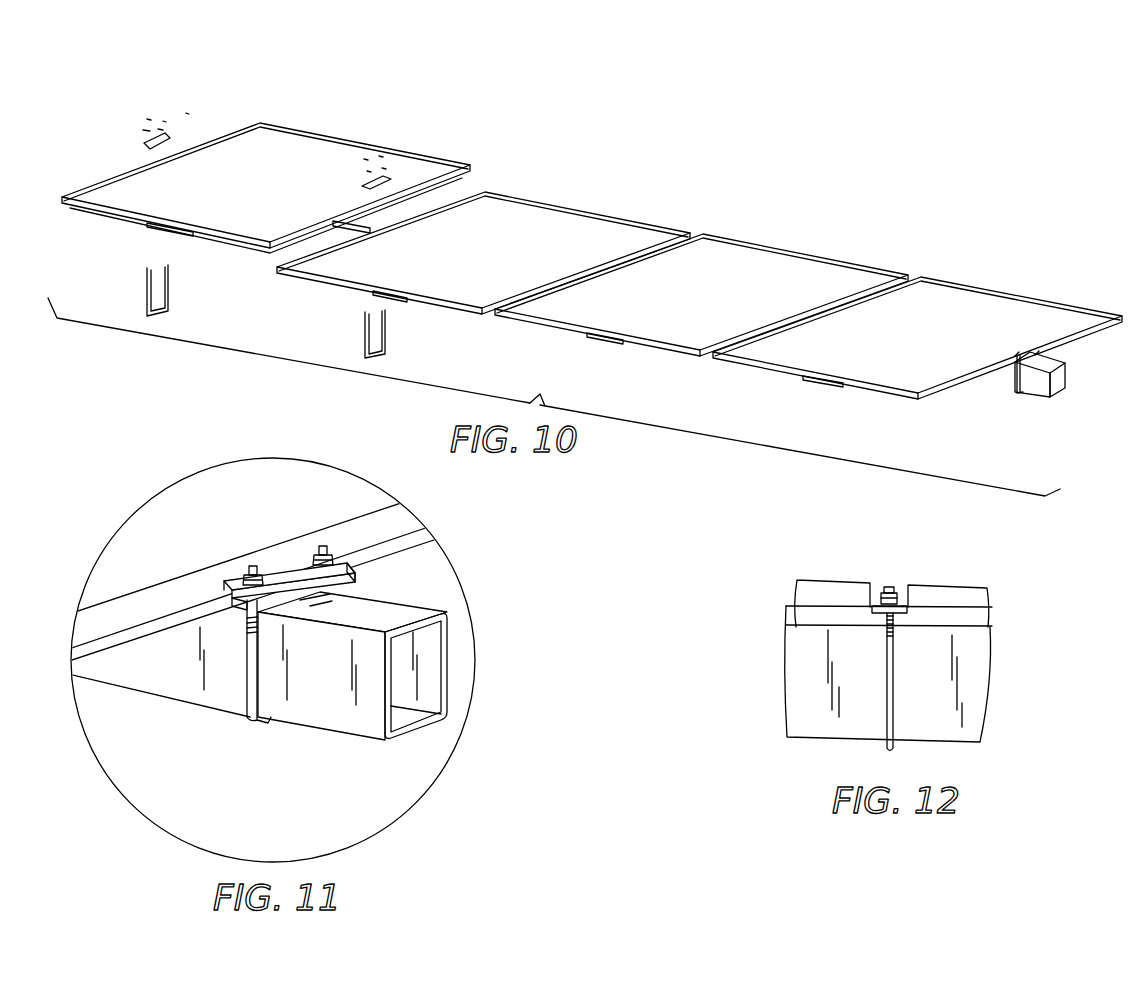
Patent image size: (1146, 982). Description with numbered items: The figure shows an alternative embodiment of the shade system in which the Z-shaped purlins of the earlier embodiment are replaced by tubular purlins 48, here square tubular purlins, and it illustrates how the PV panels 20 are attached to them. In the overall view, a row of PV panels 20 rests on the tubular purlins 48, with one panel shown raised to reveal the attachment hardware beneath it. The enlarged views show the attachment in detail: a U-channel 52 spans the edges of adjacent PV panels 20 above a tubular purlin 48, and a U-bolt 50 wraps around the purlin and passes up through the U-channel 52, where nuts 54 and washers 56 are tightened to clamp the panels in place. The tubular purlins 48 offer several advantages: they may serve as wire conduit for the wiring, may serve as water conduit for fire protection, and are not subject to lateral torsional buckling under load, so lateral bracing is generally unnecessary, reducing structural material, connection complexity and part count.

In FIG. 10, the PV panels 20 is at (428, 168).
In FIG. 11, the PV panels 20 is at (257, 582).
In FIG. 12, the PV panels 20 is at (847, 597).
In FIG. 10, the tubular purlins 48 is at (1040, 381).
In FIG. 11, the tubular purlins 48 is at (318, 700).
In FIG. 12, the tubular purlins 48 is at (977, 670).
In FIG. 10, the U-bolts 50 is at (386, 354).
In FIG. 11, the U-bolts 50 is at (250, 722).
In FIG. 12, the U-bolts 50 is at (893, 722).
In FIG. 10, the U-channels 52 is at (148, 146).
In FIG. 11, the U-channels 52 is at (297, 572).
In FIG. 12, the U-channels 52 is at (889, 609).
In FIG. 10, the nuts 54 is at (187, 110).
In FIG. 11, the nuts 54 is at (335, 552).
In FIG. 12, the nuts 54 is at (889, 595).
In FIG. 10, the washers 56 is at (181, 124).
In FIG. 11, the washers 56 is at (358, 580).